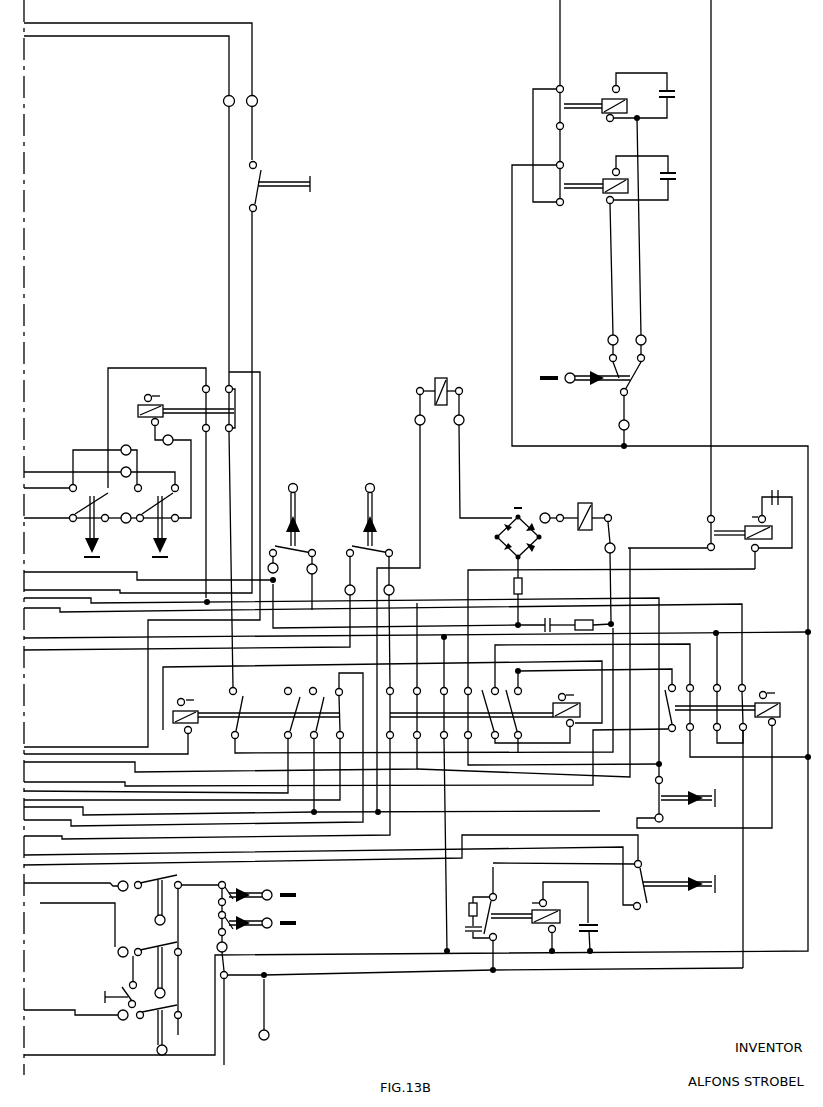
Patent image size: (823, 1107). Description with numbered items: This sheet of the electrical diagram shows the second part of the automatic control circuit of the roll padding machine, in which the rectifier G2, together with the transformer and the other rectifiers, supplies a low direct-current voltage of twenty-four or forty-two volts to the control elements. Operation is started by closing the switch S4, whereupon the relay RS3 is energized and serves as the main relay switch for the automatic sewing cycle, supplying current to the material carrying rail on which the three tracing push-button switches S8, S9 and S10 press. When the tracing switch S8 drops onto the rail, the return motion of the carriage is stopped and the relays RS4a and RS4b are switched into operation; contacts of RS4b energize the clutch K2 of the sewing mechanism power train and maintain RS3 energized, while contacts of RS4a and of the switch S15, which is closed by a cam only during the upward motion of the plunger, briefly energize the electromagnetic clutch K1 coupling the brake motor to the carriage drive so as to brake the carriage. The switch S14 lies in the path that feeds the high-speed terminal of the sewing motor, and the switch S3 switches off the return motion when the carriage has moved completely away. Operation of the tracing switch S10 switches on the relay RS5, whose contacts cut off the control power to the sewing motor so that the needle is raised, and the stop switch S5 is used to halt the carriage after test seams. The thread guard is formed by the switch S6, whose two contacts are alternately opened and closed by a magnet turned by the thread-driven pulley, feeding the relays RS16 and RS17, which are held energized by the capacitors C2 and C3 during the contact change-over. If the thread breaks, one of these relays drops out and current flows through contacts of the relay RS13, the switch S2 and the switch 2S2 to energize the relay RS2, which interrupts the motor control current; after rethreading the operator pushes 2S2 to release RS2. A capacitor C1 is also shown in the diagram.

The switch S14 is at (282, 182).
The relay RS2 is at (132, 483).
The switch S2 is at (68, 525).
The switch 2S2 is at (144, 525).
The switch S15 is at (293, 547).
The switch S3 is at (367, 540).
The electromagnetic clutch K1 is at (444, 585).
The clutch K2 is at (577, 553).
The rectifier G2 is at (527, 565).
The relay RS13 is at (750, 529).
The relay RS17 is at (615, 204).
The relay RS16 is at (616, 245).
The capacitor C3 is at (676, 95).
The capacitor C2 is at (677, 177).
The switch S6 is at (596, 392).
The relay RS4a is at (193, 715).
The relay RS4b is at (484, 708).
The relay RS5 is at (715, 749).
The stop switch S5 is at (685, 796).
The switch S4 is at (675, 885).
The relay RS3 is at (526, 918).
The capacitor C1 is at (598, 936).
The tracing switch S8 is at (121, 900).
The tracing switch S10 is at (111, 954).
The tracing switch S9 is at (103, 1030).